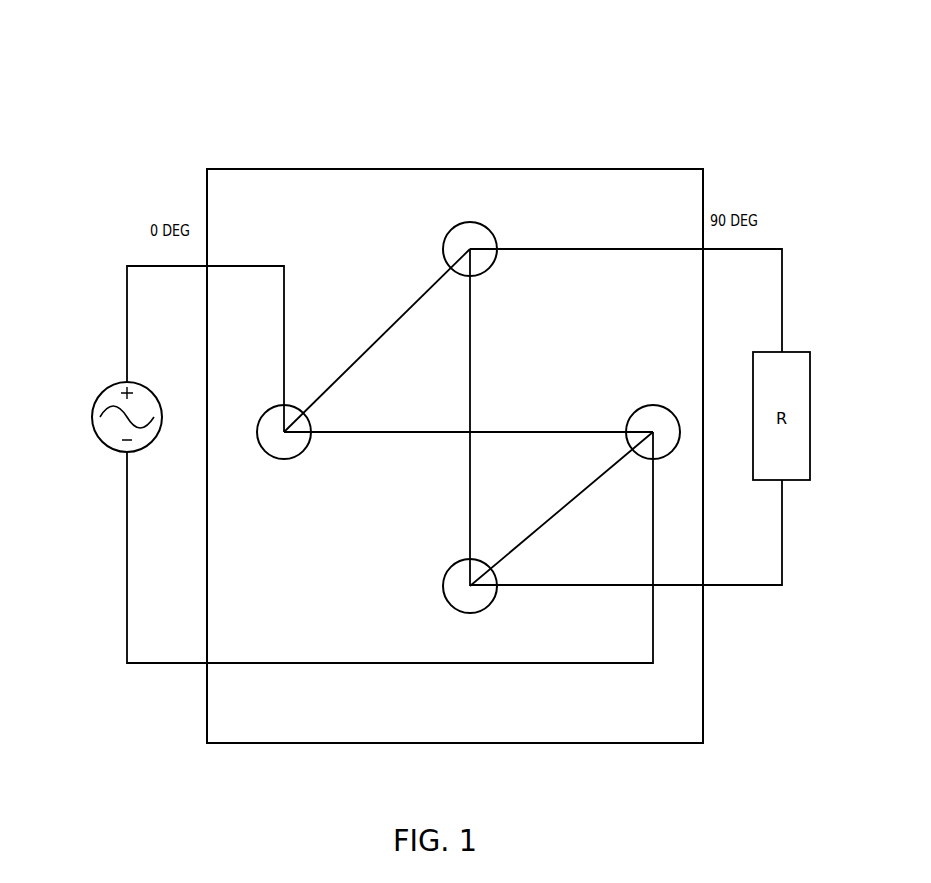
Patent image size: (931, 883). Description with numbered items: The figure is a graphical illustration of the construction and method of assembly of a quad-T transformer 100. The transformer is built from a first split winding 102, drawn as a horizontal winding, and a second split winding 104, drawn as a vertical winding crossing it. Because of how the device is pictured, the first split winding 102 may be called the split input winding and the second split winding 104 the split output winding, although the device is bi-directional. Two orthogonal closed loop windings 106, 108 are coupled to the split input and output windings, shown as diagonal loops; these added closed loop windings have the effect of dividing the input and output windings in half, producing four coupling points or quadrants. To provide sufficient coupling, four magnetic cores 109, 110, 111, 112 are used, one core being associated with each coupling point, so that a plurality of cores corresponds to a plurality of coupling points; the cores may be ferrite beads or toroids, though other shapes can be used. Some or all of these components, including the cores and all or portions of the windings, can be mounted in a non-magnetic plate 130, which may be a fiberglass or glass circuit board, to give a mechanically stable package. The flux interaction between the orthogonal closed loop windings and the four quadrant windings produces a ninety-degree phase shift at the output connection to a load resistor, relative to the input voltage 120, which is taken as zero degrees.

The quad-T transformer 100 is at (708, 47).
The first split winding 102 is at (375, 433).
The second split winding 104 is at (470, 358).
The orthogonal closed loop winding 106 is at (380, 338).
The orthogonal closed loop winding 108 is at (569, 503).
The magnetic core 109 is at (284, 459).
The magnetic core 110 is at (653, 406).
The magnetic core 111 is at (443, 248).
The magnetic core 112 is at (443, 586).
The input voltage 120 is at (92, 416).
The non-magnetic plate 130 is at (703, 708).